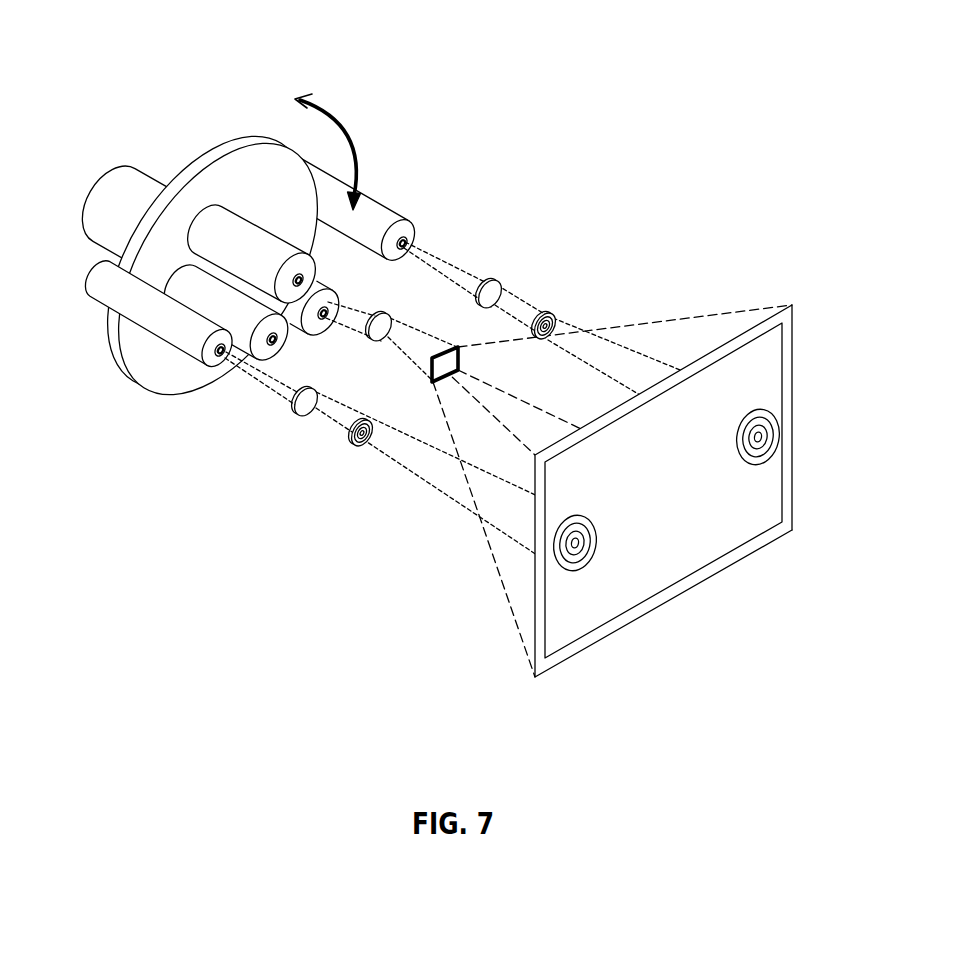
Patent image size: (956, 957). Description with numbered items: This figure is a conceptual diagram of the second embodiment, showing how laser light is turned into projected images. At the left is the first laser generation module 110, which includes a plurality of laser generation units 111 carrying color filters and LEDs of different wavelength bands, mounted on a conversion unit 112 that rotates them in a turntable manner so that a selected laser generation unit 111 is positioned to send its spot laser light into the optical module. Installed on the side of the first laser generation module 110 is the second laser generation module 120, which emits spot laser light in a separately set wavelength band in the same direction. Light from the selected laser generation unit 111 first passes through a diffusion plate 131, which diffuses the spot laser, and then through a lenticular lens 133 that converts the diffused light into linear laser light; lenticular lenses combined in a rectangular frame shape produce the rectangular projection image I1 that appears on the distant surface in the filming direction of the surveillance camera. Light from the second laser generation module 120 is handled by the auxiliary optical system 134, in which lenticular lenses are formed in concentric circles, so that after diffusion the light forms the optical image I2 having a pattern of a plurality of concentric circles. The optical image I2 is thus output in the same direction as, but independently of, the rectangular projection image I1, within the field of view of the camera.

The first laser generation module 110 is at (241, 240).
The laser generation unit 111 is at (193, 302).
The conversion unit 112 is at (135, 352).
The second laser generation module 120 is at (369, 214).
The diffusion plate 131 is at (377, 344).
The lenticular lens 133 is at (437, 386).
The auxiliary optical system 134 is at (547, 314).
The rectangular projection image I1 is at (698, 491).
The optical image I2 is at (780, 453).